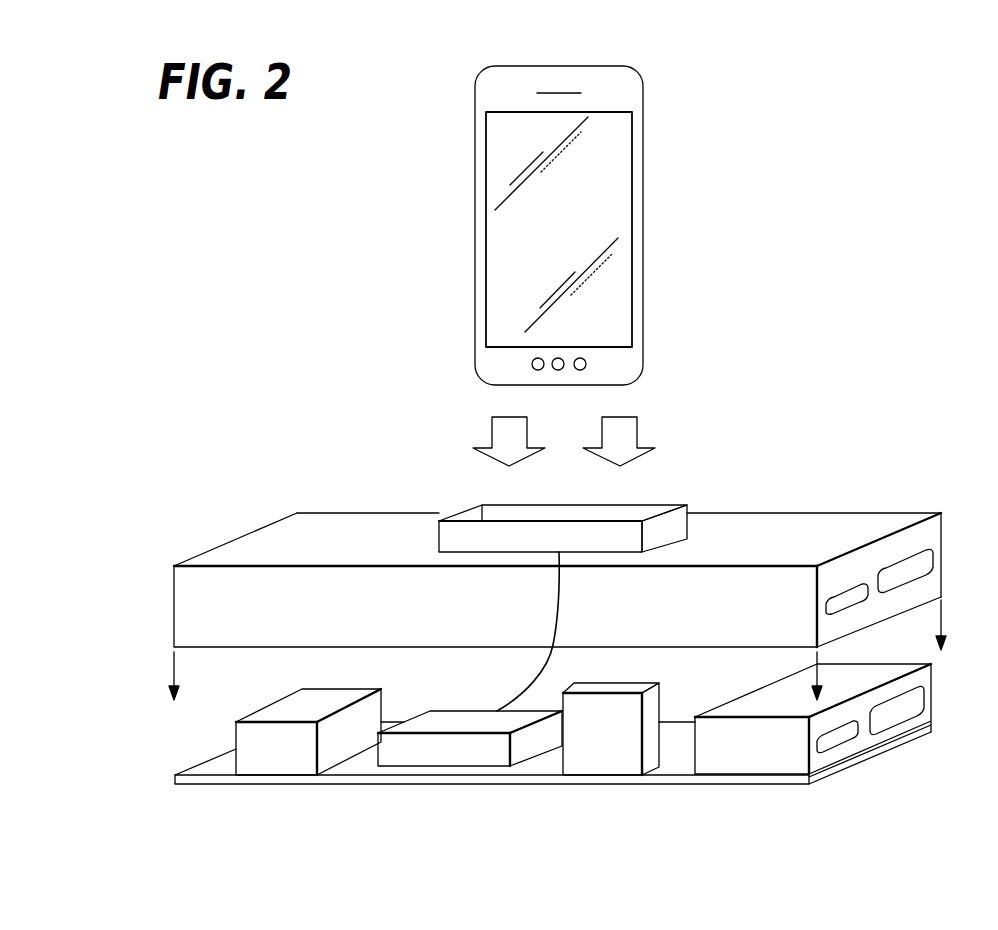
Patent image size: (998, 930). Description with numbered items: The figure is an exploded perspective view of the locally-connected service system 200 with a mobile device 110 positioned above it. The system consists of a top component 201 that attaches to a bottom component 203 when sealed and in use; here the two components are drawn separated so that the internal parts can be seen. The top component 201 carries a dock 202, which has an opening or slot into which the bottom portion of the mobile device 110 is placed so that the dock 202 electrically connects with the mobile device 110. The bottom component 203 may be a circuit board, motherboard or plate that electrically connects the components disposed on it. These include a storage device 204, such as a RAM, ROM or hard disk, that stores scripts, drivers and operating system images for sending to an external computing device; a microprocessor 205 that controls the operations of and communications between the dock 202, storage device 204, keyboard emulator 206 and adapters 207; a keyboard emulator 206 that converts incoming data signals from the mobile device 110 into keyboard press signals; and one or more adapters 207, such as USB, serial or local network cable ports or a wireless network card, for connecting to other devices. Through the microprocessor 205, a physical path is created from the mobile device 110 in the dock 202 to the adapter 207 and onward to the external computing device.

The mobile device 110 is at (643, 123).
The locally-connected service system 200 is at (322, 440).
The top component 201 is at (174, 607).
The dock 202 is at (660, 508).
The bottom component 203 is at (210, 768).
The storage device 204 is at (308, 732).
The microprocessor 205 is at (470, 738).
The keyboard emulator 206 is at (611, 729).
The adapters 207 is at (813, 719).